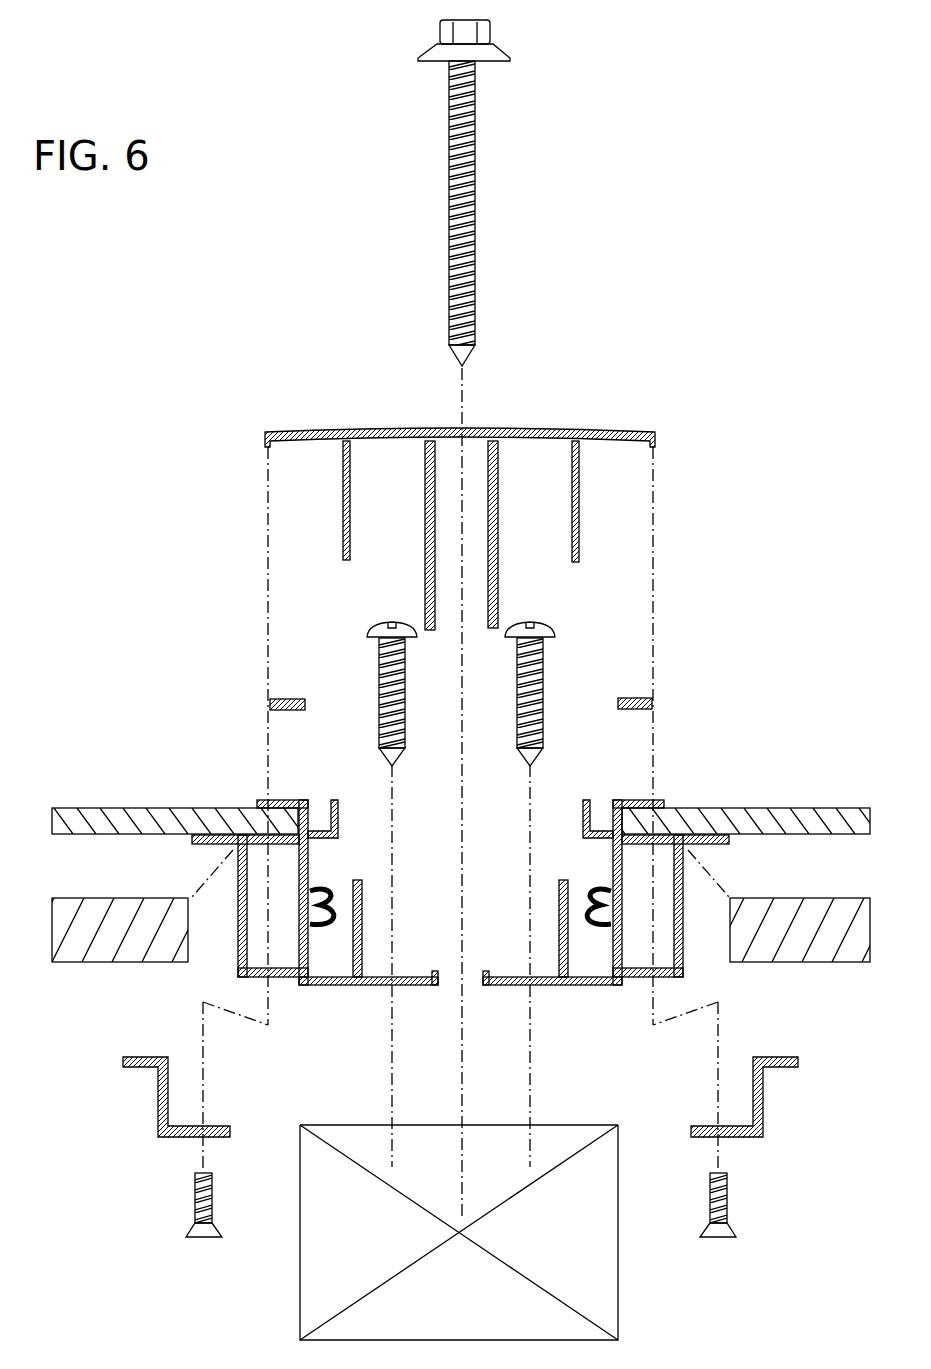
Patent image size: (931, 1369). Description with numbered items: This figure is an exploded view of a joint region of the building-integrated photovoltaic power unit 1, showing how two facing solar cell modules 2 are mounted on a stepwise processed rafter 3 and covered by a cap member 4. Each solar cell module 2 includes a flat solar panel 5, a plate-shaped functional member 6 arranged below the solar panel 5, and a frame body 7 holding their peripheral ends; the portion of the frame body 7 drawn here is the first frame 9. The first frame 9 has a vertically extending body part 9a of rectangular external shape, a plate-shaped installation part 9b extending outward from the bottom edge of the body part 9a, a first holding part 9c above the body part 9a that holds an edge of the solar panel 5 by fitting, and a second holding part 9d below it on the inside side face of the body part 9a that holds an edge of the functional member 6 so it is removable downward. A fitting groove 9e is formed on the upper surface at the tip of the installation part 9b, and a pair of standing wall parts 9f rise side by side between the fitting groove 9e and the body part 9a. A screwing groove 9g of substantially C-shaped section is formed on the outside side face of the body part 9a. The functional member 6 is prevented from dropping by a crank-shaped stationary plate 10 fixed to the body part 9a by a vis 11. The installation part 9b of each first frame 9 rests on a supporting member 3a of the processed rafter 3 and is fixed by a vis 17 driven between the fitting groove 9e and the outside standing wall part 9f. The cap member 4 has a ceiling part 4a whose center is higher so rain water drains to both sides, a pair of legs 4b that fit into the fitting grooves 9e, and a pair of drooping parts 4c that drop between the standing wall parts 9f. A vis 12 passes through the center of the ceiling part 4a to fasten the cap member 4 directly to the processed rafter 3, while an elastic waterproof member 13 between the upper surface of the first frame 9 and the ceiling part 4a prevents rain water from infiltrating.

The building-integrated photovoltaic power unit 1 is at (790, 238).
The solar cell module 2 is at (457, 864).
The processed rafter 3 is at (506, 1214).
The supporting member 3a is at (553, 1125).
The cap member 4 is at (460, 489).
The ceiling part 4a is at (372, 433).
The leg 4b is at (425, 527).
The drooping part 4c is at (343, 497).
The solar panel 5 is at (88, 826).
The functional member 6 is at (70, 963).
The frame body 7 is at (462, 910).
The first frame 9 is at (462, 910).
The body part 9a is at (238, 945).
The installation part 9b is at (400, 987).
The first holding part 9c is at (272, 810).
The second holding part 9d is at (215, 850).
The fitting groove 9e is at (430, 977).
The standing wall part 9f is at (338, 815).
The screwing groove 9g is at (330, 987).
The stationary plate 10 is at (158, 1105).
The vis 11 is at (192, 1215).
The vis 12 is at (477, 202).
The waterproof member 13 is at (285, 699).
The vis 17 is at (379, 672).